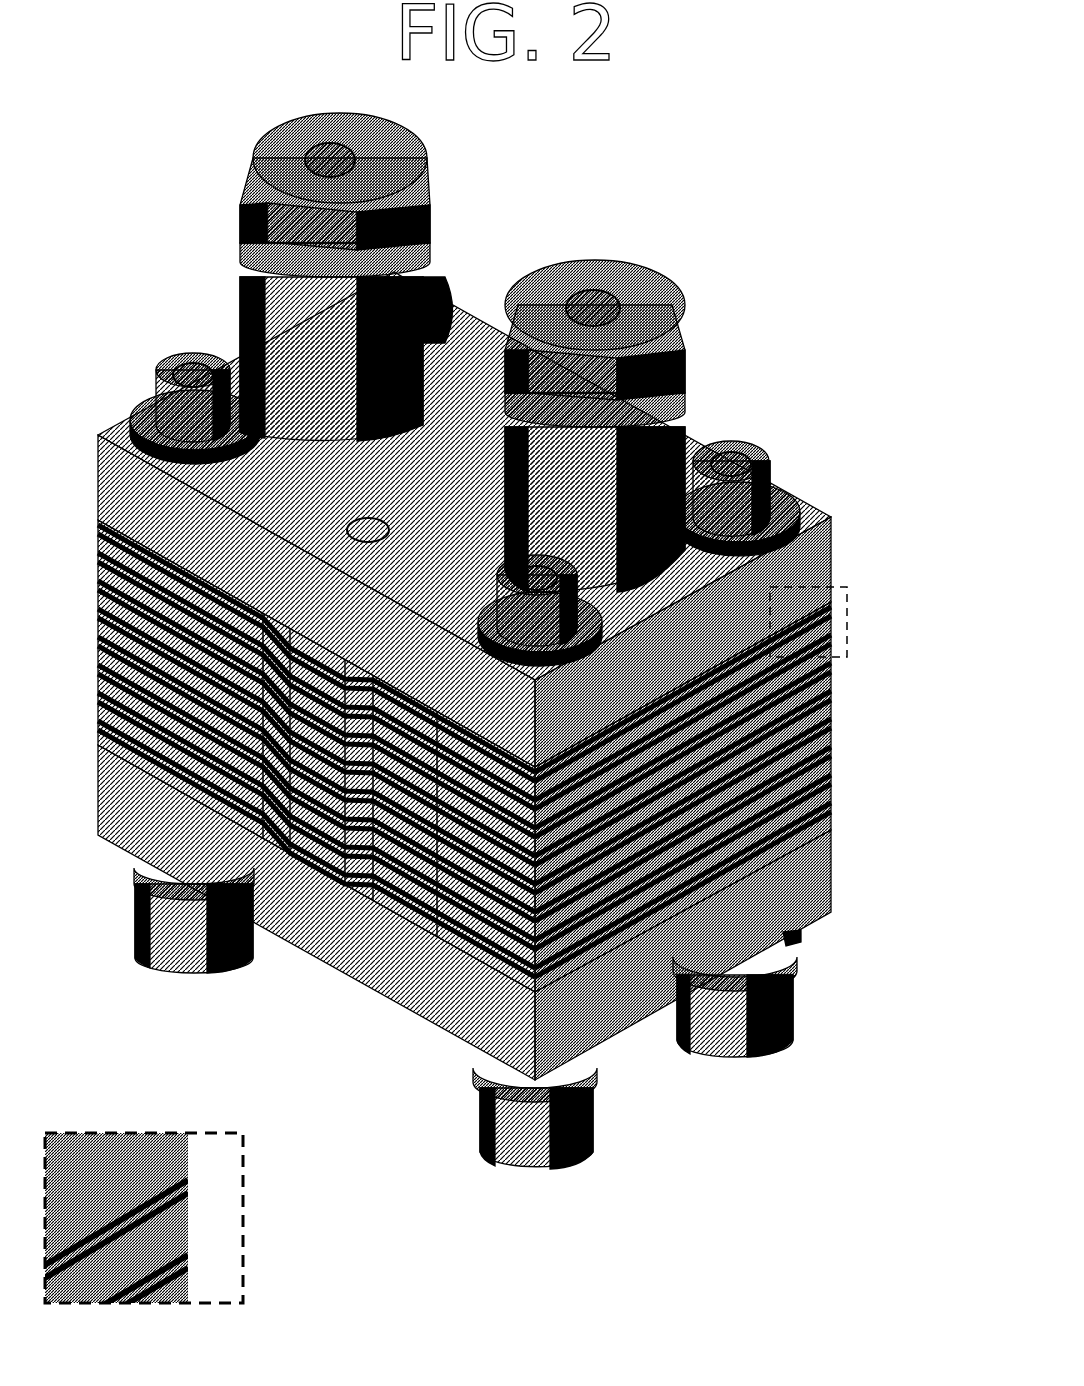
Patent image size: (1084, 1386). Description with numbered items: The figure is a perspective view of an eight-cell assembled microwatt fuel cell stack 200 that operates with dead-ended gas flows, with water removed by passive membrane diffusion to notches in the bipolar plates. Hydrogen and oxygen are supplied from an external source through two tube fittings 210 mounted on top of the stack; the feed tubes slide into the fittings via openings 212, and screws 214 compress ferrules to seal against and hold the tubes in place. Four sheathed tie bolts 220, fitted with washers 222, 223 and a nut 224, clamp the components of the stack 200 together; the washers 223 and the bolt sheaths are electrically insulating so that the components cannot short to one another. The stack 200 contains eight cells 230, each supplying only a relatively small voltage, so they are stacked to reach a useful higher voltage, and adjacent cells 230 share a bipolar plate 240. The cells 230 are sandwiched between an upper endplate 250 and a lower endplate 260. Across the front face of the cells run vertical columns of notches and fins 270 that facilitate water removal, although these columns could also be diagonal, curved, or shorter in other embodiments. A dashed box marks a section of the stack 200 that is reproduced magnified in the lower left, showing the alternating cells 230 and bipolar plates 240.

The microwatt fuel cell stack 200 is at (502, 660).
The tube fitting 210 is at (528, 352).
The opening 212 is at (603, 312).
The screw 214 is at (686, 350).
The sheathed tie bolt 220 is at (770, 450).
The washer 222 is at (792, 481).
The washer 223 is at (800, 935).
The nut 224 is at (793, 997).
The cell 230 is at (829, 602).
The bipolar plate 240 is at (502, 917).
The upper endplate 250 is at (832, 553).
The lower endplate 260 is at (829, 875).
The notches and fins 270 is at (280, 828).